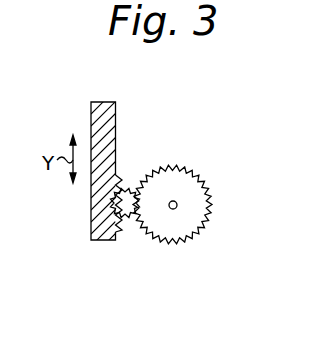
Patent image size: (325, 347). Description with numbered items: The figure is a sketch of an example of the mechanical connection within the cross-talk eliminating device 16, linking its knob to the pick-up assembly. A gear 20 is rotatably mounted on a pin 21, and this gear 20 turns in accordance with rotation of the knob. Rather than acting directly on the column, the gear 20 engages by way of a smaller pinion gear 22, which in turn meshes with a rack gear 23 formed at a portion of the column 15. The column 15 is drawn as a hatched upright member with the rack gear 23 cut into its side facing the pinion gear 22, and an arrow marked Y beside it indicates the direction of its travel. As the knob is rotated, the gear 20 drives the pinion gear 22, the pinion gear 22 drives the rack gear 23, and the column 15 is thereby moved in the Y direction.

The column 15 is at (117, 104).
The cross-talk eliminating device 16 is at (226, 159).
The gear 20 is at (193, 240).
The pin 21 is at (177, 205).
The pinion gear 22 is at (127, 185).
The rack gear 23 is at (128, 228).